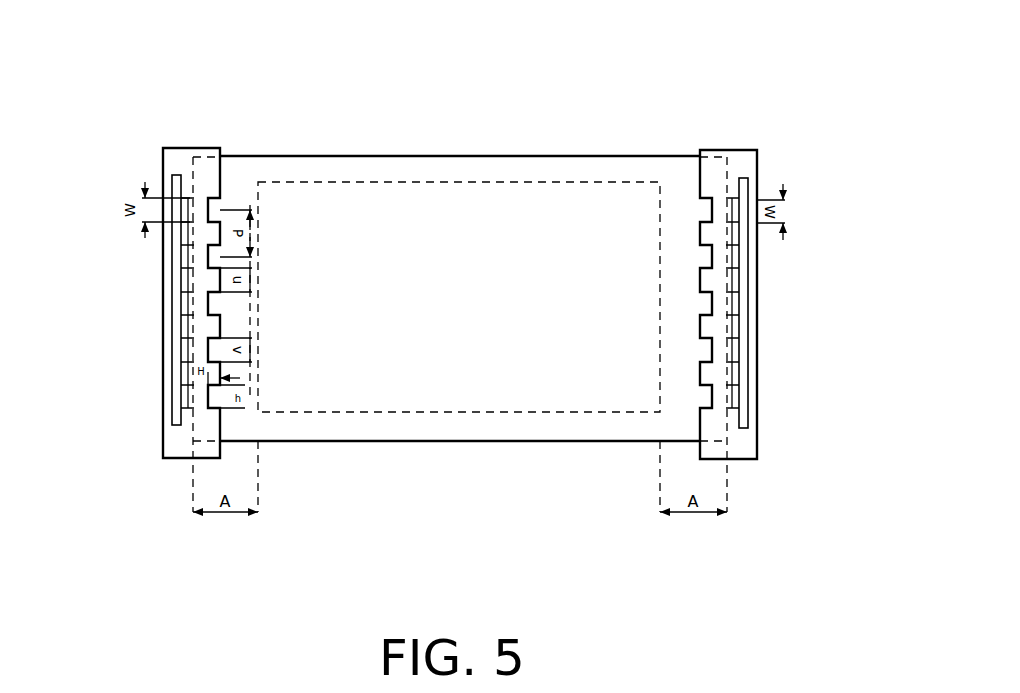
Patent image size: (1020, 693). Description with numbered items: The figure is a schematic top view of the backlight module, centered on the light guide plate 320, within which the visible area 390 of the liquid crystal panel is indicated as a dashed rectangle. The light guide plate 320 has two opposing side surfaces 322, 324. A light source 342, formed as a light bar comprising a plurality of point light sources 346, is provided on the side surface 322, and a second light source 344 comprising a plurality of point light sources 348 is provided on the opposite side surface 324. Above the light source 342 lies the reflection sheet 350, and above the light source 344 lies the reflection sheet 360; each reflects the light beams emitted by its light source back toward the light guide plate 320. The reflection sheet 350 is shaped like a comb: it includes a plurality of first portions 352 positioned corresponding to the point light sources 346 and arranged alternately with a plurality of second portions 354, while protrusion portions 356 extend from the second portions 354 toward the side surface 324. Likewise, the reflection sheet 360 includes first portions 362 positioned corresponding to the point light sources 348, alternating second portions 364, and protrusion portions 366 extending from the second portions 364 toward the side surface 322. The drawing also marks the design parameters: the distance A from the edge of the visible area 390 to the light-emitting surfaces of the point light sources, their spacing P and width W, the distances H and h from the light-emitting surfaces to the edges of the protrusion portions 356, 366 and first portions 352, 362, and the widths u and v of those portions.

The light guide plate 320 is at (502, 375).
The visible area 390 is at (585, 182).
The reflection sheet 350 is at (197, 132).
The reflection sheet 360 is at (722, 133).
The light source 342 is at (182, 178).
The light source 344 is at (743, 172).
The side surface 322 is at (192, 210).
The side surface 324 is at (728, 232).
The point light sources 346 is at (188, 205).
The point light sources 348 is at (728, 212).
The protrusion portions 356 is at (210, 245).
The second portions 354 is at (195, 270).
The first portions 352 is at (212, 277).
The first portions 362 is at (727, 262).
The protrusion portions 366 is at (720, 283).
The second portions 364 is at (713, 292).